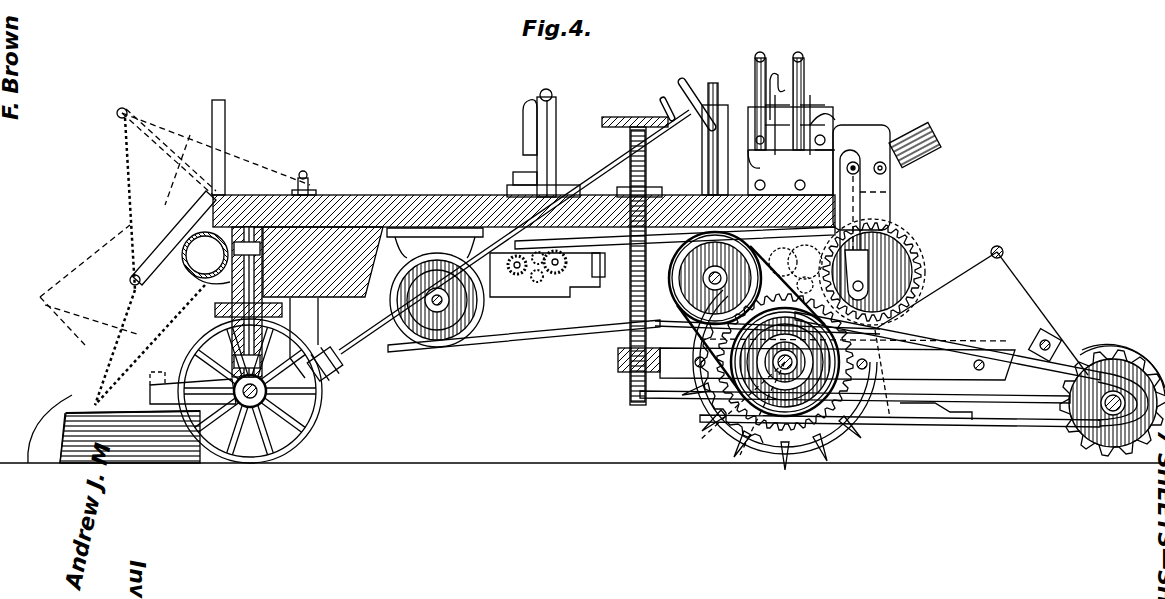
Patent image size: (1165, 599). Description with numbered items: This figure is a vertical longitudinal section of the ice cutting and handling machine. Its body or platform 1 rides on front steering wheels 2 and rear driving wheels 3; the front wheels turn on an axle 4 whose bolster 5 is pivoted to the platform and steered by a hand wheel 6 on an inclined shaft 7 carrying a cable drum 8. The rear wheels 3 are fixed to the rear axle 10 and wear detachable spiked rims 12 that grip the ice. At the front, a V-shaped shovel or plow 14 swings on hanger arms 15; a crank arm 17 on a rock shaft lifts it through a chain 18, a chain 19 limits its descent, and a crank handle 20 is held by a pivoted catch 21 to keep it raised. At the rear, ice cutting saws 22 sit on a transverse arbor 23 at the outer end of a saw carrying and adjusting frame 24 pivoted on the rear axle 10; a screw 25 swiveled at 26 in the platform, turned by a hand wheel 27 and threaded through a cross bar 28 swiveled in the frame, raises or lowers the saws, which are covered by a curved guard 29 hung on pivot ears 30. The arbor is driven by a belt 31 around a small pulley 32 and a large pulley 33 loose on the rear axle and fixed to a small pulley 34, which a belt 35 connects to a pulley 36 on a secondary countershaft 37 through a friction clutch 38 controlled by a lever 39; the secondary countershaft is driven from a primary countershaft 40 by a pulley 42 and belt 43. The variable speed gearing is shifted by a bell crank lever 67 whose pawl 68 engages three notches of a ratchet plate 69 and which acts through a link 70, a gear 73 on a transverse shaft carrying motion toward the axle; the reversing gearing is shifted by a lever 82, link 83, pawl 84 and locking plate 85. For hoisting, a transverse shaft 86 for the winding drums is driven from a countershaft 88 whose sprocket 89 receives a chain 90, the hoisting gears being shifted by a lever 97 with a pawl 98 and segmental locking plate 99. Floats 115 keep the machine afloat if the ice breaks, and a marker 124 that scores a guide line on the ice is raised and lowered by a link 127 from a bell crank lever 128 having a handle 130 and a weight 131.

The body or platform 1 is at (415, 198).
The front steering wheels 2 is at (310, 410).
The rear driving wheels 3 is at (738, 405).
The axle 4 is at (248, 398).
The bolster 5 is at (215, 285).
The hand wheel 6 is at (705, 95).
The shaft 7 is at (612, 168).
The drum 8 is at (328, 352).
The rear axle 10 is at (780, 372).
The spiked rims 12 is at (785, 376).
The V-shaped shovel or plow 14 is at (62, 410).
The hanger arms 15 is at (170, 385).
The crank arm 17 is at (168, 240).
The chain 18 is at (125, 318).
The chain 19 is at (140, 337).
The crank handle 20 is at (212, 128).
The pivoted catch 21 is at (300, 182).
The ice cutting saws 22 is at (1125, 440).
The transverse arbor 23 is at (1085, 428).
The saw carrying and adjusting frame 24 is at (640, 406).
The screw 25 is at (634, 312).
The swivel 26 is at (702, 190).
The hand wheel 27 is at (622, 118).
The cross bar 28 is at (620, 366).
The curved guard 29 is at (1120, 348).
The pivot ears 30 is at (1050, 340).
The belt 31 is at (1010, 385).
The small pulley 32 is at (1108, 415).
The large pulley 33 is at (812, 440).
The small pulley 34 is at (718, 412).
The belt 35 is at (700, 348).
The pulley 36 is at (690, 255).
The secondary countershaft 37 is at (710, 276).
The friction clutch 38 is at (684, 305).
The lever 39 is at (716, 100).
The primary countershaft 40 is at (425, 322).
The pulley 42 is at (450, 322).
The belt 43 is at (558, 333).
The lever 67 is at (802, 70).
The pawl 68 is at (826, 140).
The segmental locking or ratchet plate 69 is at (790, 165).
The link 70 is at (862, 215).
The gear 73 is at (905, 262).
The lever 82 is at (758, 70).
The link 83 is at (775, 100).
The pawl 84 is at (750, 120).
The locking or ratchet plate 85 is at (760, 165).
The transverse shaft 86 is at (512, 277).
The countershaft 88 is at (520, 297).
The sprocket 89 is at (560, 287).
The chain 90 is at (606, 280).
The lever 97 is at (550, 100).
The pawl 98 is at (523, 138).
The segmental locking plate 99 is at (525, 180).
The floats 115 is at (200, 262).
The marker 124 is at (950, 430).
The link 127 is at (890, 192).
The bell crank lever 128 is at (853, 160).
The handle 130 is at (825, 110).
The weight 131 is at (932, 132).